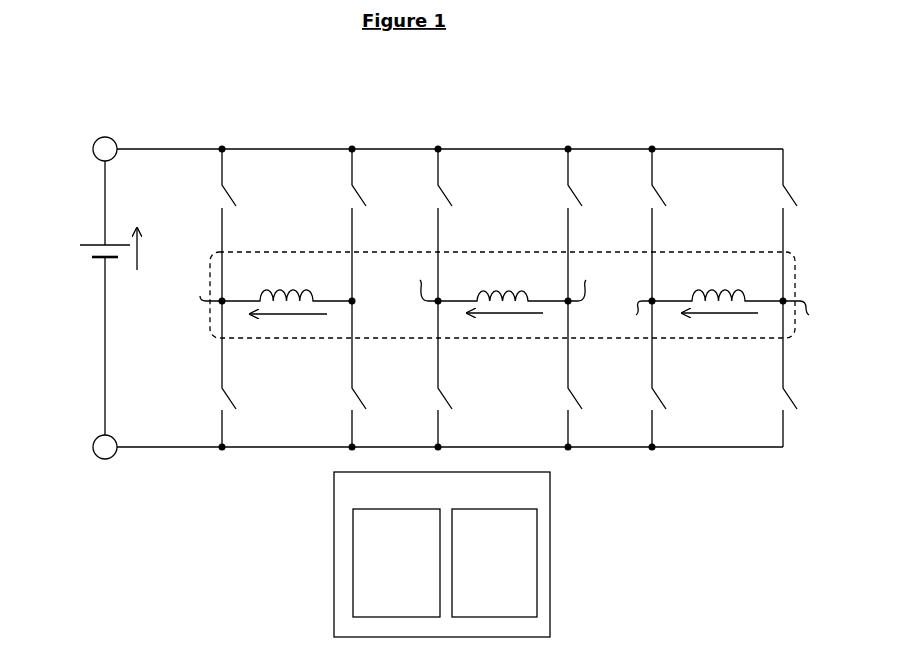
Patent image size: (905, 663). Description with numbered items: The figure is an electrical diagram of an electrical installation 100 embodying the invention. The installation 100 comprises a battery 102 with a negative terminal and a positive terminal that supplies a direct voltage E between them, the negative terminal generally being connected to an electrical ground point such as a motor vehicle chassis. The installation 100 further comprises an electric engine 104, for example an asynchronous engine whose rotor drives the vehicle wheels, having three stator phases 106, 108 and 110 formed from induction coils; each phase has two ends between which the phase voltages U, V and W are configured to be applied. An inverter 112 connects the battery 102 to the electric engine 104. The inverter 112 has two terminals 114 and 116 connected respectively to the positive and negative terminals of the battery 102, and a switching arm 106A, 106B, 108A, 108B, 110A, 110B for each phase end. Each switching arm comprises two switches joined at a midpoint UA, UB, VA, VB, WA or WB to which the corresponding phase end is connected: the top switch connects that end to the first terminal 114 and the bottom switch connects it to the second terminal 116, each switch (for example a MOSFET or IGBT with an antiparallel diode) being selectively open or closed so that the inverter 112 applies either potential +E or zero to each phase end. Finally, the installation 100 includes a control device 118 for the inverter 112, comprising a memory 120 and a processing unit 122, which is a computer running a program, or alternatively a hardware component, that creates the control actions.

The electrical installation 100 is at (32, 372).
The battery 102 is at (104, 245).
The electric engine 104 is at (800, 292).
The phase 106 is at (258, 297).
The switching arm 106A is at (205, 236).
The switching arm 106B is at (368, 237).
The phase 108 is at (476, 297).
The switching arm 108A is at (430, 350).
The switching arm 108B is at (578, 350).
The phase 110 is at (691, 297).
The switching arm 110A is at (637, 237).
The switching arm 110B is at (798, 237).
The inverter 112 is at (310, 72).
The first terminal 114 is at (105, 137).
The second terminal 116 is at (105, 459).
The control device 118 is at (442, 554).
The memory 120 is at (396, 563).
The processing unit 122 is at (494, 563).